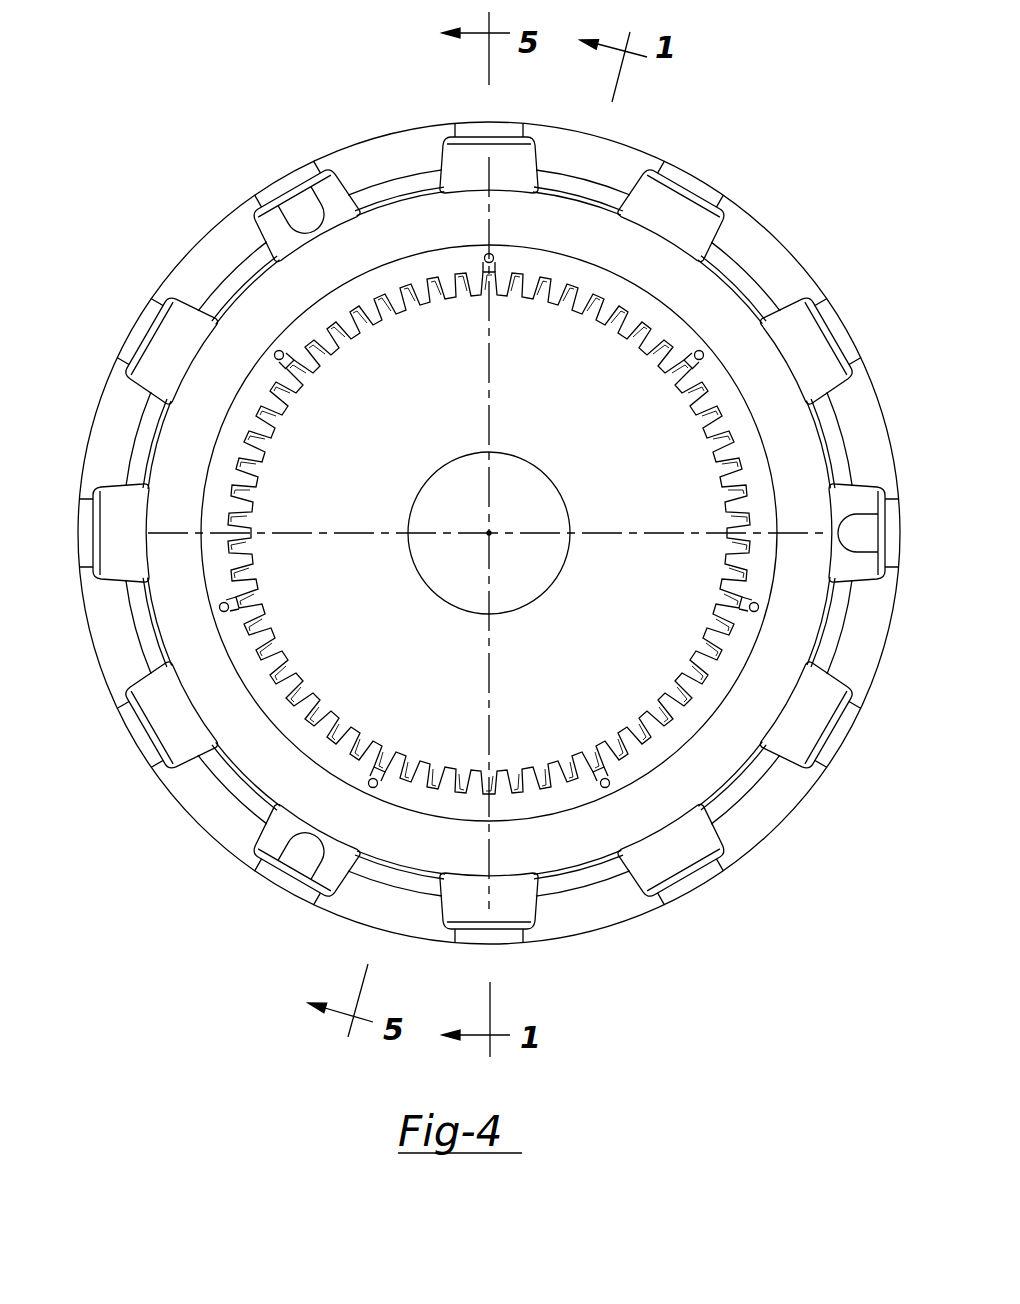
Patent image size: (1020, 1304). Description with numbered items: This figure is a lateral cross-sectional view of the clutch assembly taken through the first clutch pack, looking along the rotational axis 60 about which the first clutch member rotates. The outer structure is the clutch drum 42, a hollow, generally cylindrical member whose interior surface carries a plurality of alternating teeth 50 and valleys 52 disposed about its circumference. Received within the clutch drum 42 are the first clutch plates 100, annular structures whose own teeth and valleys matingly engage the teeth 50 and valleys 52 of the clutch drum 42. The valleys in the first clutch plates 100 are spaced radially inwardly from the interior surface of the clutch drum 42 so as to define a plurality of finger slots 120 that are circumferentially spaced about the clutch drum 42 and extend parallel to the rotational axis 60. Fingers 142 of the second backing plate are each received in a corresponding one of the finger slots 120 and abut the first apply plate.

The clutch drum 42 is at (106, 630).
The teeth 50 is at (387, 150).
The valleys 52 is at (292, 192).
The rotational axis 60 is at (489, 533).
The first clutch plates 100 is at (796, 458).
The finger slots 120 is at (152, 618).
The fingers 142 is at (232, 275).